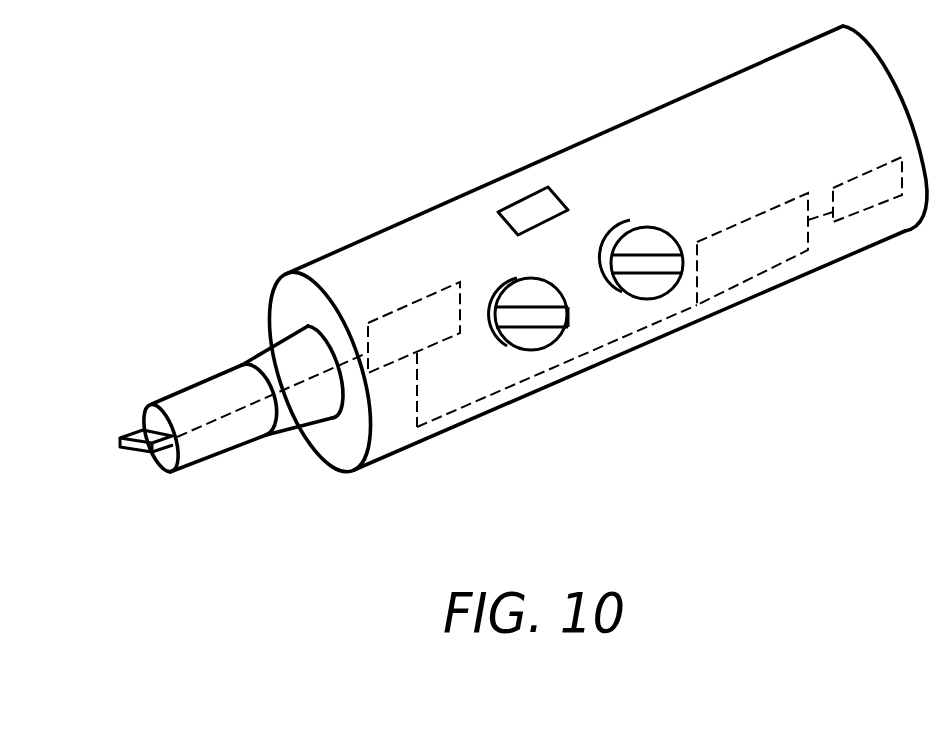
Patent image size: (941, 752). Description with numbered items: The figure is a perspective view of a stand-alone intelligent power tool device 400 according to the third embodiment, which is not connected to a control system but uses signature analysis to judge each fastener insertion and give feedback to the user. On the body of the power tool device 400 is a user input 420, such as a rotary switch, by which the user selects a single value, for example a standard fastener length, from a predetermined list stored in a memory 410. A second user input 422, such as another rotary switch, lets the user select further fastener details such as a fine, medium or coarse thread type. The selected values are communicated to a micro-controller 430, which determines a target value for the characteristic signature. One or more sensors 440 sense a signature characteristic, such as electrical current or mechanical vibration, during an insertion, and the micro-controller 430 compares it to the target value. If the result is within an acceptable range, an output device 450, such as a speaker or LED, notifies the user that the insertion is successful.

The power tool device 400 is at (350, 137).
The memory 410 is at (867, 200).
The user input 420 is at (517, 278).
The second user input 422 is at (645, 283).
The micro-controller 430 is at (748, 258).
The sensors 440 is at (405, 305).
The output device 450 is at (530, 203).